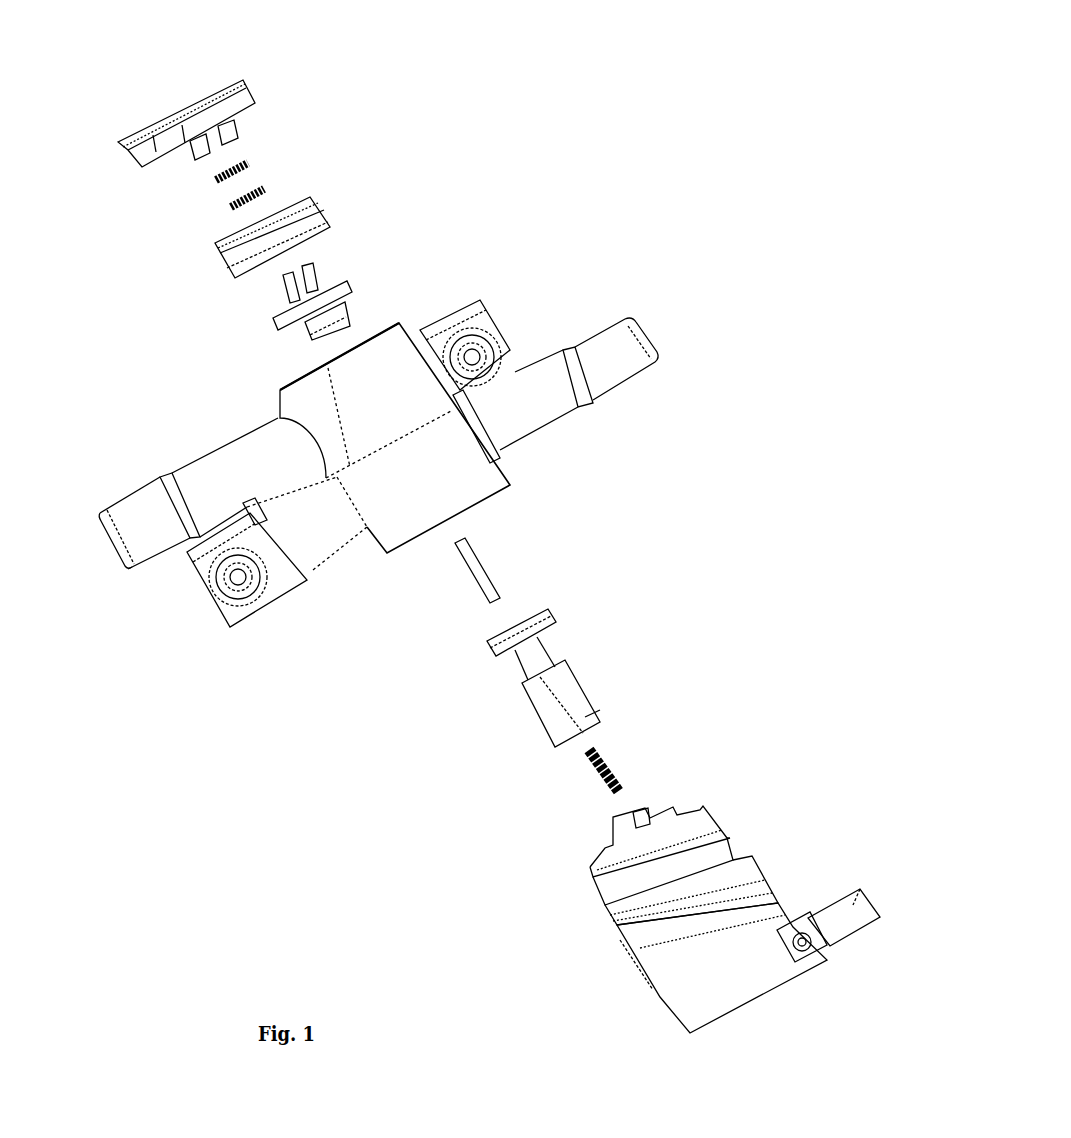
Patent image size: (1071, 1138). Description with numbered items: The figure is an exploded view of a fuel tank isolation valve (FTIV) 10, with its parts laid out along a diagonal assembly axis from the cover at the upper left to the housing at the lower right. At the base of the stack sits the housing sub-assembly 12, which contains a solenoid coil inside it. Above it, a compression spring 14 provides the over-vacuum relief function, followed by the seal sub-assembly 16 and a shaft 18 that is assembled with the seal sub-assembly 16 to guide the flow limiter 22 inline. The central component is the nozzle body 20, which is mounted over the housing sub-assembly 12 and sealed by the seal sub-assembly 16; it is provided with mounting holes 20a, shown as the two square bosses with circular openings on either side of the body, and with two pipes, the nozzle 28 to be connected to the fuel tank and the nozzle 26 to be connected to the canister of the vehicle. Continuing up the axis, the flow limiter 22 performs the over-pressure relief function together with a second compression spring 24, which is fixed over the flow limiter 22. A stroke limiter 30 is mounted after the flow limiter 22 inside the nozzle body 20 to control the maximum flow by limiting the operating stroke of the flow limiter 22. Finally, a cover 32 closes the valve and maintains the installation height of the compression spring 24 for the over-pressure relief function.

The fuel tank isolation valve 10 is at (674, 120).
The housing sub-assembly 12 is at (697, 835).
The compression spring 14 is at (600, 772).
The seal sub-assembly 16 is at (577, 690).
The shaft 18 is at (480, 565).
The nozzle body 20 is at (327, 414).
The mounting holes 20a is at (478, 348).
The flow limiter 22 is at (327, 313).
The compression spring 24 is at (255, 180).
The nozzle 26 is at (143, 528).
The nozzle 28 is at (598, 345).
The cover 32 is at (197, 107).
The stroke limiter 30 is at (318, 210).